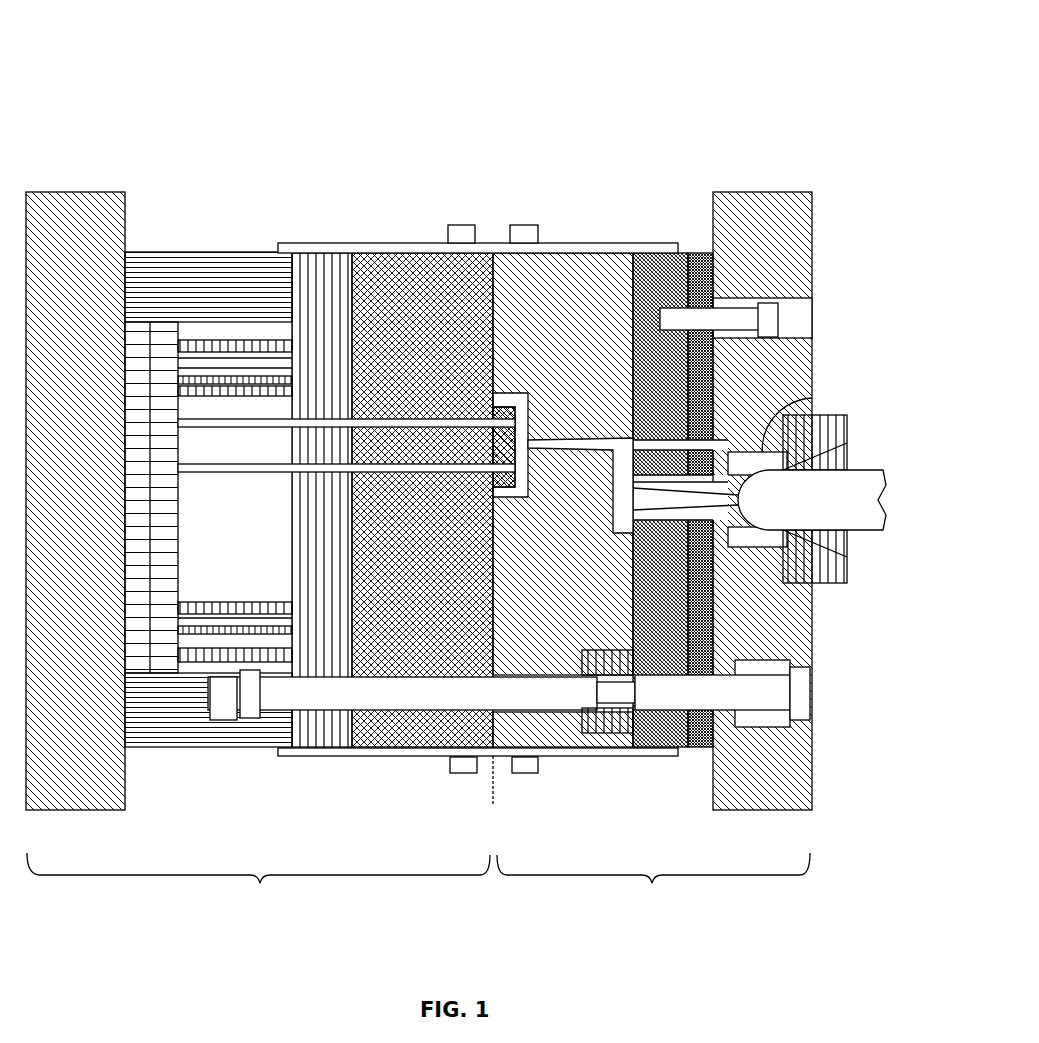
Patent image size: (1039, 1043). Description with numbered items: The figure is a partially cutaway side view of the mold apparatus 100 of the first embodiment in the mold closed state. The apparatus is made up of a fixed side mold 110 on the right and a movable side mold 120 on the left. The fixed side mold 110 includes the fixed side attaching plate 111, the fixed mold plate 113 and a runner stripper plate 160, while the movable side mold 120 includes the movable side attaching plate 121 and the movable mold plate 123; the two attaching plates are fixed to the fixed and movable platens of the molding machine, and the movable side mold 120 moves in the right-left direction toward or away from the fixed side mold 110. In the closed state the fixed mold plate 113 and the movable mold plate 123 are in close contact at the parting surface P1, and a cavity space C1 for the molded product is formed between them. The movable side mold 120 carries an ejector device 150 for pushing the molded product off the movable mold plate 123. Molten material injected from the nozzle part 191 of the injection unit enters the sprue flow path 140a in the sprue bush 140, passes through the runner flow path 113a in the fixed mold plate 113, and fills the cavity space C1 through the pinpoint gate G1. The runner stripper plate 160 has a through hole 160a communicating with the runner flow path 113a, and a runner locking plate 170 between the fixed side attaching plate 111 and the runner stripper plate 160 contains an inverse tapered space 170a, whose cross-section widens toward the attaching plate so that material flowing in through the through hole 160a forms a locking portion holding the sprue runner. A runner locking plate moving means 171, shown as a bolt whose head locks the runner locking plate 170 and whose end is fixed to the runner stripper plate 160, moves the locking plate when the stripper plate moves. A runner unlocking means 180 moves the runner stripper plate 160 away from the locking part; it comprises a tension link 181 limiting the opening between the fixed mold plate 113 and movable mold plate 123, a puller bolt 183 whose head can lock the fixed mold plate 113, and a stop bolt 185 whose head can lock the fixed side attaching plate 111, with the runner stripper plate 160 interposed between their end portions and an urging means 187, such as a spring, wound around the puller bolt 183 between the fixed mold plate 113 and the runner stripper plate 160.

The mold apparatus 100 is at (181, 84).
The fixed side mold 110 is at (653, 884).
The fixed side attaching plate 111 is at (758, 200).
The fixed mold plate 113 is at (587, 430).
The runner flow path 113a is at (572, 270).
The movable side mold 120 is at (258, 884).
The movable side attaching plate 121 is at (98, 207).
The movable mold plate 123 is at (398, 285).
The sprue bush 140 is at (770, 396).
The sprue flow path 140a is at (813, 597).
The ejector device 150 is at (212, 233).
The runner stripper plate 160 is at (653, 256).
The through hole 160a is at (770, 368).
The runner locking plate 170 is at (693, 256).
The inverse tapered space 170a is at (800, 375).
The runner locking plate moving means 171 is at (768, 323).
The runner unlocking means 180 is at (577, 795).
The tension link 181 is at (345, 758).
The puller bolt 183 is at (410, 700).
The stop bolt 185 is at (772, 693).
The urging means 187 is at (613, 757).
The nozzle part 191 is at (857, 520).
The cavity space C1 is at (430, 300).
The gate G1 is at (527, 440).
The parting surface P1 is at (492, 795).